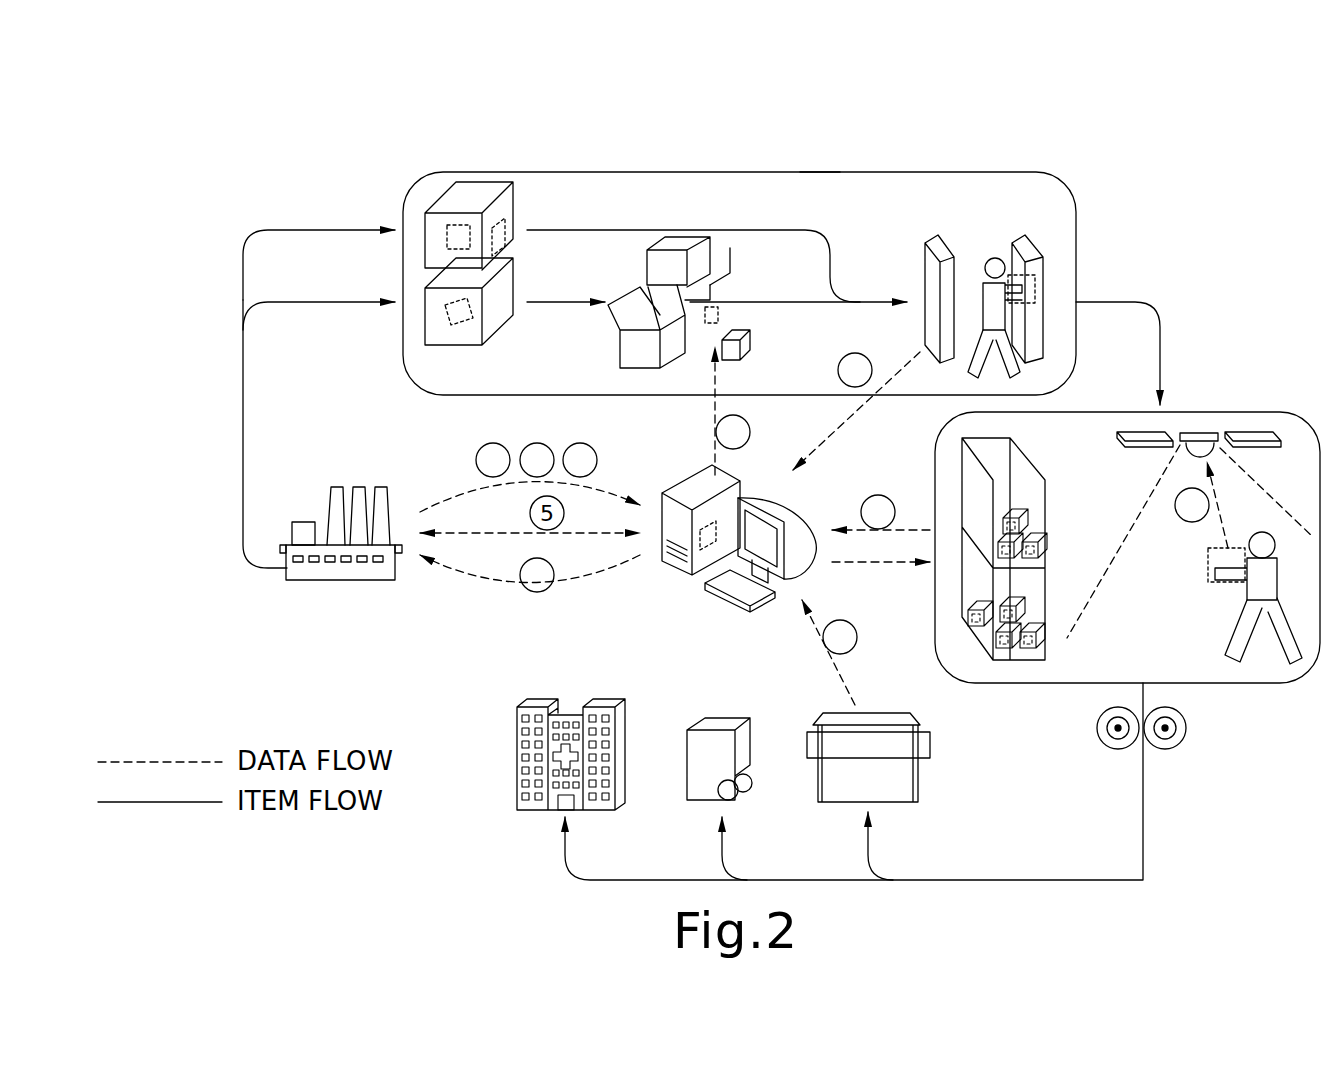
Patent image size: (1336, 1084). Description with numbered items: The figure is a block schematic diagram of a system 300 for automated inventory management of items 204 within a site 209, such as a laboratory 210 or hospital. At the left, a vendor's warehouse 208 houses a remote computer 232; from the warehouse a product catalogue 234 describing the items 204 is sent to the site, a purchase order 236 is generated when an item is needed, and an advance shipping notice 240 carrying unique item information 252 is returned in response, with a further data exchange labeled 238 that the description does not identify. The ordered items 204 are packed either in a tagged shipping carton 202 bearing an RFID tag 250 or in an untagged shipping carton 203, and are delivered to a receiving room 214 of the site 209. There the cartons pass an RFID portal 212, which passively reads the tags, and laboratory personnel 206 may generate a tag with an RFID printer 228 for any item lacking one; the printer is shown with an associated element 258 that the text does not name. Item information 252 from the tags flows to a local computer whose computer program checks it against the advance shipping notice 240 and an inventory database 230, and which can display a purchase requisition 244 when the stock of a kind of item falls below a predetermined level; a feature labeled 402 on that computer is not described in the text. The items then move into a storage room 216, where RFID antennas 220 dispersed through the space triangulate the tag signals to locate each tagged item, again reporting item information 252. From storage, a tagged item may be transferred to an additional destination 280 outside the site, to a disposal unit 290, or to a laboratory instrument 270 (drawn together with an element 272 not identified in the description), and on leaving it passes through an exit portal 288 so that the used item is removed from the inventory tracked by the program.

The system 300 is at (295, 100).
The tagged shipping carton 202 is at (470, 213).
The untagged shipping carton 203 is at (572, 265).
The item 204 is at (505, 228).
The RFID tag 250 is at (452, 238).
The receiving room 214 is at (820, 172).
The laboratory 210 is at (813, 253).
The site 209 is at (1045, 182).
The RFID portal 212 is at (930, 275).
The laboratory personnel 206 is at (990, 262).
The RFID printer 228 is at (700, 256).
The container tag 258 is at (719, 312).
The item information 252 is at (846, 354).
The storage room 216 is at (1190, 412).
The RFID antenna 220 is at (1205, 425).
The product catalogue 234 is at (485, 446).
The data transfer 238 is at (540, 443).
The advance shipping notice 240 is at (588, 446).
The purchase order 236 is at (548, 590).
The tag on computer 402 is at (712, 542).
The purchase requisition 244 is at (768, 535).
The remote computer 232 is at (305, 521).
The vendor's warehouse 208 is at (362, 582).
The inventory database 230 is at (736, 533).
The additional destination 280 is at (517, 760).
The disposal unit 290 is at (700, 725).
The laboratory instrument 270 is at (947, 757).
The container 272 is at (900, 780).
The exit portal 288 is at (1168, 752).